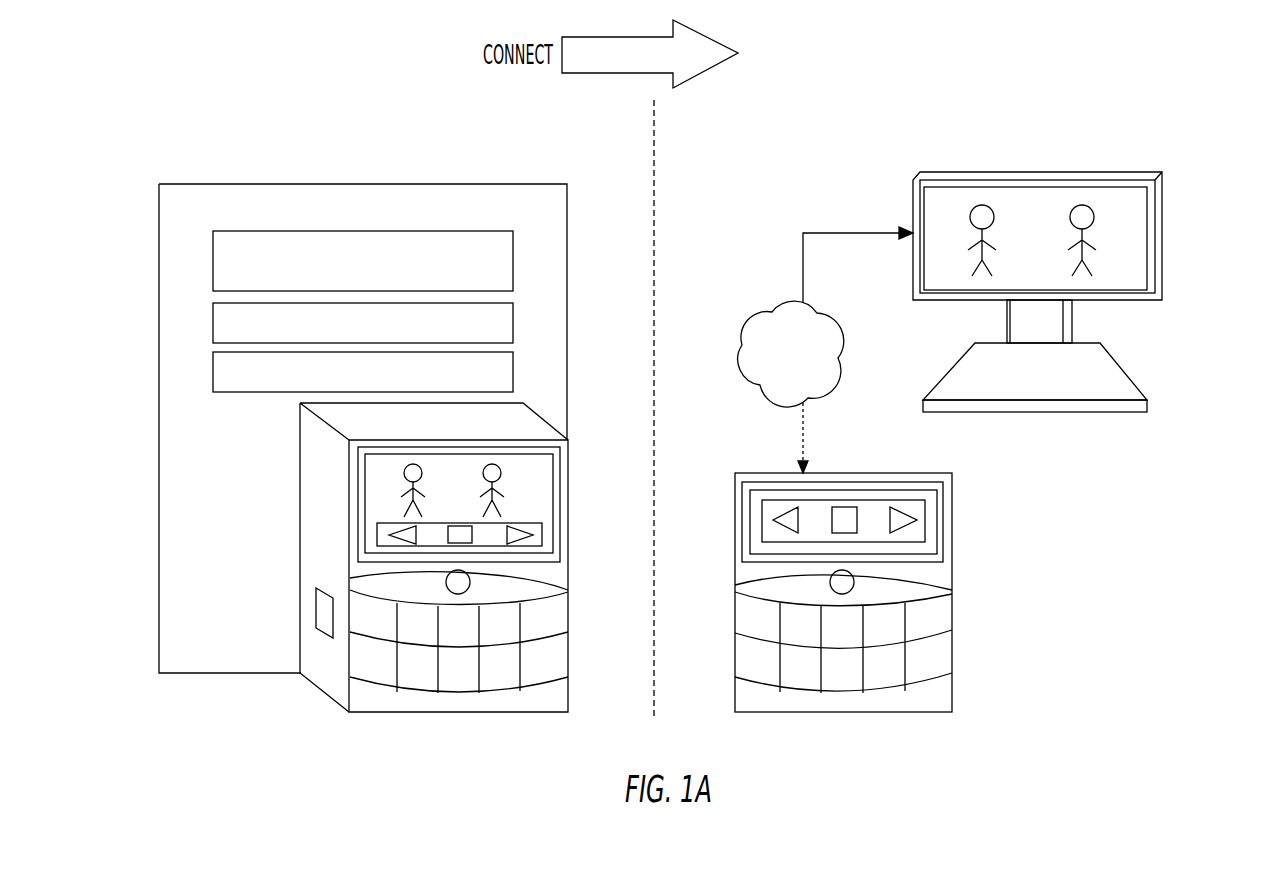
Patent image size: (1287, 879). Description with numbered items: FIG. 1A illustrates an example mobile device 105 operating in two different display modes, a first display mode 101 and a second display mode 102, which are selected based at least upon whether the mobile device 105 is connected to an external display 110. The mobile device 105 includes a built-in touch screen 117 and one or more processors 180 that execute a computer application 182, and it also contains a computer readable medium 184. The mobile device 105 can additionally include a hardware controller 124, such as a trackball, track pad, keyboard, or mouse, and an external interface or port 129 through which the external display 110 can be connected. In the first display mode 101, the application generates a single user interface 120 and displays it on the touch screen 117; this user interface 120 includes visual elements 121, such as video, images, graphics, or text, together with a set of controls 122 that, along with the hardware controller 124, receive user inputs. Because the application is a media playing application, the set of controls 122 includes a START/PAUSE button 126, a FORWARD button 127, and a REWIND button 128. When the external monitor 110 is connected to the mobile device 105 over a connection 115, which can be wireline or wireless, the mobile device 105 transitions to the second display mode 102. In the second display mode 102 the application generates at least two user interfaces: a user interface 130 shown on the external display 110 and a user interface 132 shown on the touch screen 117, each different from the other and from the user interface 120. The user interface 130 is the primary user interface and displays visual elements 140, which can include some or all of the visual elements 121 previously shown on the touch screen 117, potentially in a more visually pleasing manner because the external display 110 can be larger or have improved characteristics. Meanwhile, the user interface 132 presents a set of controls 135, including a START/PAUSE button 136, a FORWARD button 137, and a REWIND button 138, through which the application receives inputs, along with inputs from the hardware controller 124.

The first display mode 101 is at (445, 142).
The second display mode 102 is at (985, 142).
The mobile device 105 is at (415, 713).
The external display 110 is at (1045, 413).
The connection 115 is at (782, 304).
The touch screen 117 is at (350, 460).
The user interface 120 is at (358, 487).
The visual elements 121 is at (543, 480).
The set of controls 122 is at (382, 523).
The hardware controller 124 is at (350, 574).
The START/PAUSE button 126 is at (472, 546).
The FORWARD button 127 is at (532, 537).
The REWIND button 128 is at (377, 537).
The port 129 is at (317, 633).
The user interface 130 is at (1050, 172).
The user interface 132 is at (742, 538).
The set of controls 135 is at (925, 537).
The START/PAUSE button 136 is at (843, 507).
The FORWARD button 137 is at (900, 505).
The REWIND button 138 is at (793, 528).
The visual elements 140 is at (1095, 220).
The processors 180 is at (433, 274).
The computer application 182 is at (513, 330).
The computer readable medium 184 is at (513, 378).